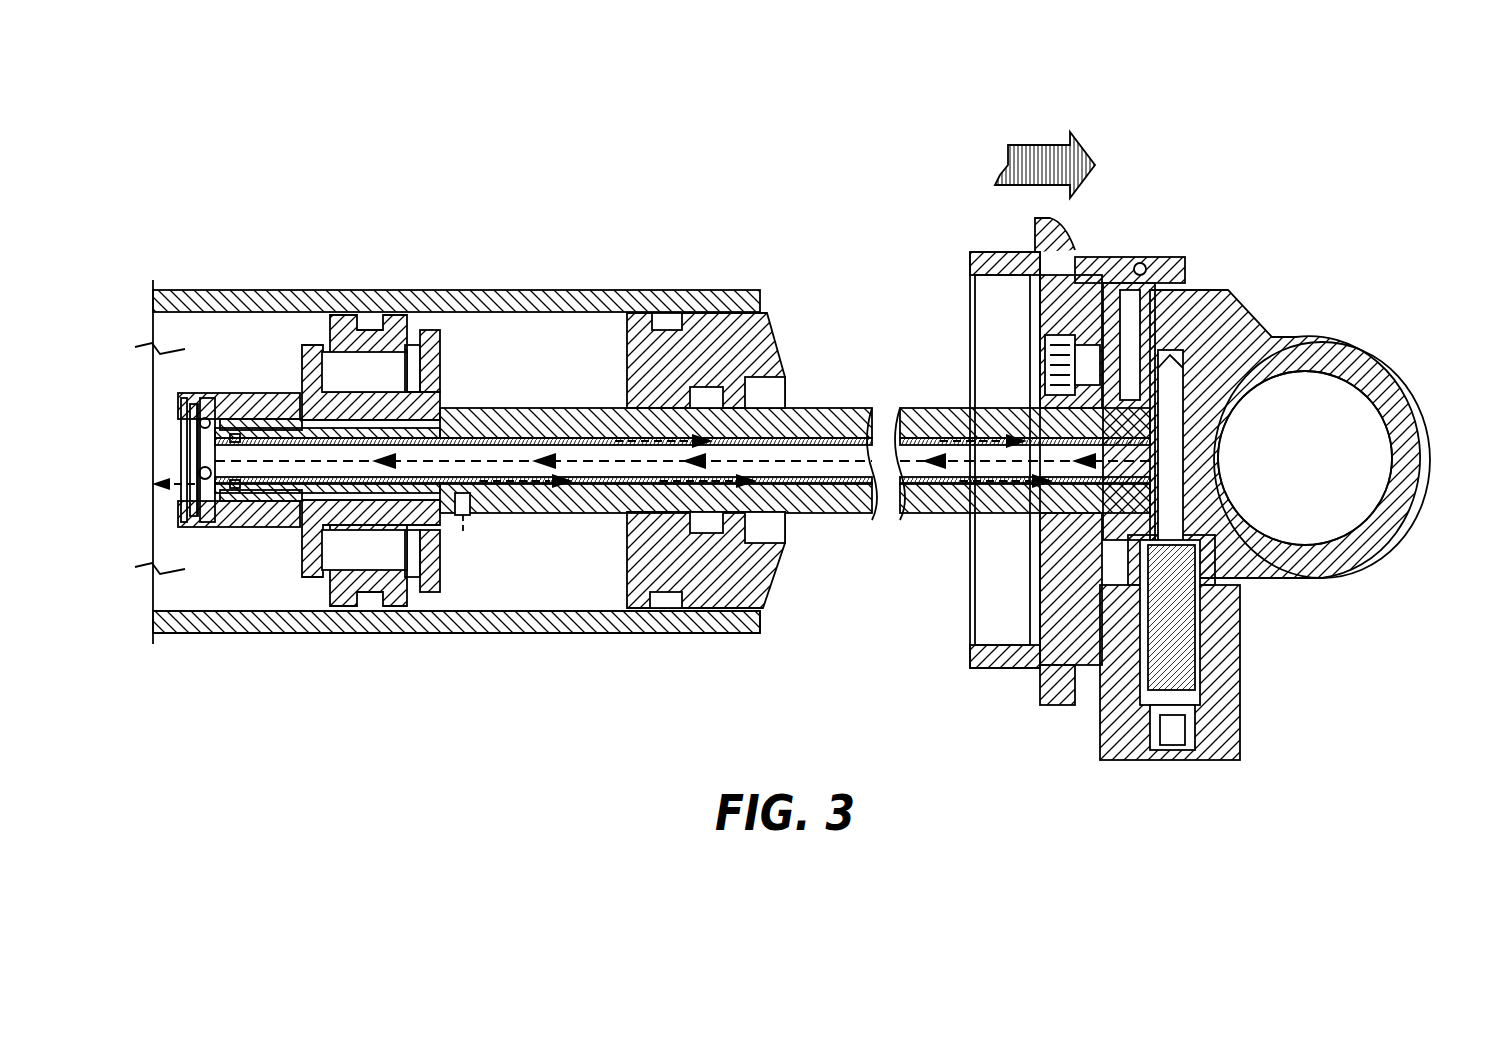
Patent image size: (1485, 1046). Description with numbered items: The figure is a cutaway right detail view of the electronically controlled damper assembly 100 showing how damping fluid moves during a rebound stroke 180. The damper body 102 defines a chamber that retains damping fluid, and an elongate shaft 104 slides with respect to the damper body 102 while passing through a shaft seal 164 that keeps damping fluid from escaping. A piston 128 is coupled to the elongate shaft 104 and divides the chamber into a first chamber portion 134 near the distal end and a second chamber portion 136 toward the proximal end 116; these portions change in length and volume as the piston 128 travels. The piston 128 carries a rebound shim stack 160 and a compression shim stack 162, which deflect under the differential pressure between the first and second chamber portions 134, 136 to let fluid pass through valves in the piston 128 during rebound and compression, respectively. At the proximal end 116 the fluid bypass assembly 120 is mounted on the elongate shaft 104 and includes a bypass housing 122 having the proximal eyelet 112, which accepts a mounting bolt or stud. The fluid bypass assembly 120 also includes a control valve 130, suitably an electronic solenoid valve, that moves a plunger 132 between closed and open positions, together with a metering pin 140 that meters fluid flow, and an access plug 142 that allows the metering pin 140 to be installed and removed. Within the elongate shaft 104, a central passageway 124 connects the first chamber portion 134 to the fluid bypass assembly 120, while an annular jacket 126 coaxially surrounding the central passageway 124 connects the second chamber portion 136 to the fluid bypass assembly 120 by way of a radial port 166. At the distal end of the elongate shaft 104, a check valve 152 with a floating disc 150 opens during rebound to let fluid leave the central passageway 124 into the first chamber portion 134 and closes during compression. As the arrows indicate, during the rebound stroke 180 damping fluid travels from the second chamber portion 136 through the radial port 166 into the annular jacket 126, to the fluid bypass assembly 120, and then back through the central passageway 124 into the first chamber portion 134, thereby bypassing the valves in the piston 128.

The electronically controlled damper assembly 100 is at (1282, 178).
The damper body 102 is at (215, 291).
The elongate shaft 104 is at (812, 406).
The proximal eyelet 112 is at (1412, 384).
The proximal end 116 is at (1428, 456).
The fluid bypass assembly 120 is at (1366, 348).
The bypass housing 122 is at (1232, 302).
The central passageway 124 is at (824, 464).
The annular jacket 126 is at (858, 440).
The piston 128 is at (358, 318).
The control valve 130 is at (1102, 730).
The plunger 132 is at (1188, 622).
The first chamber portion 134 is at (246, 614).
The second chamber portion 136 is at (565, 585).
The metering pin 140 is at (1132, 266).
The access plug 142 is at (1045, 350).
The floating disc 150 is at (188, 446).
The check valve 152 is at (212, 405).
The rebound shim stack 160 is at (318, 346).
The compression shim stack 162 is at (432, 332).
The shaft seal 164 is at (700, 348).
The radial port 166 is at (468, 518).
The rebound stroke 180 is at (1046, 162).